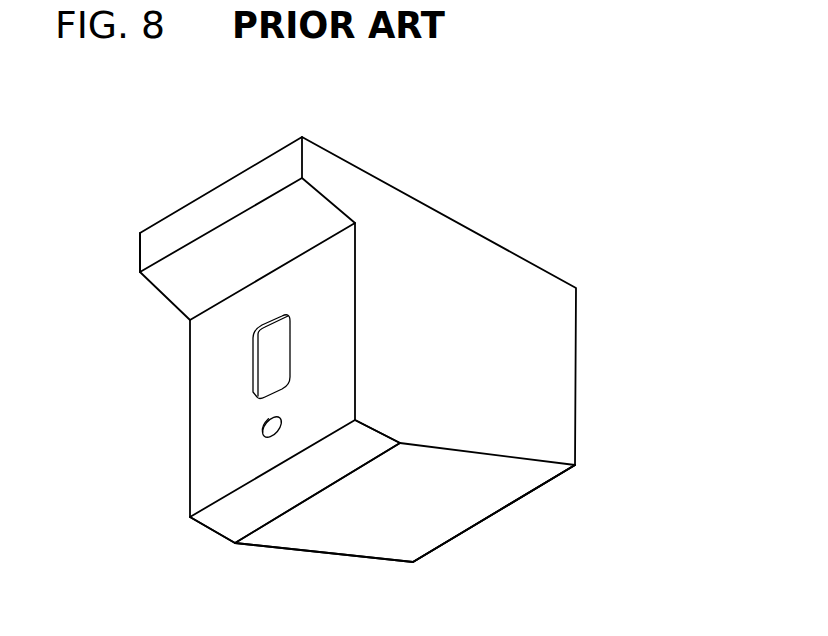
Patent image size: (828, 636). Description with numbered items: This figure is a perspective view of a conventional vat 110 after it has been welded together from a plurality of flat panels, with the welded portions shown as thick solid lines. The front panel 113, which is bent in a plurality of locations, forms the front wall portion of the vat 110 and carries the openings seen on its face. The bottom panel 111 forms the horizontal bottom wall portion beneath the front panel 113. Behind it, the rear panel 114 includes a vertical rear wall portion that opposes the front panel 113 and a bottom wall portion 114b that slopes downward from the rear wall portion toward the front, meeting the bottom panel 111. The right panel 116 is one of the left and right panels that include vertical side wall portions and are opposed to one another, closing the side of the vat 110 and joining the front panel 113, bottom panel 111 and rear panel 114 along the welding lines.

The vat 110 is at (358, 343).
The right panel 116 is at (435, 230).
The front panel 113 is at (223, 388).
The bottom panel 111 is at (247, 510).
The rear panel 114 is at (508, 482).
The bottom wall portion 114b is at (450, 497).